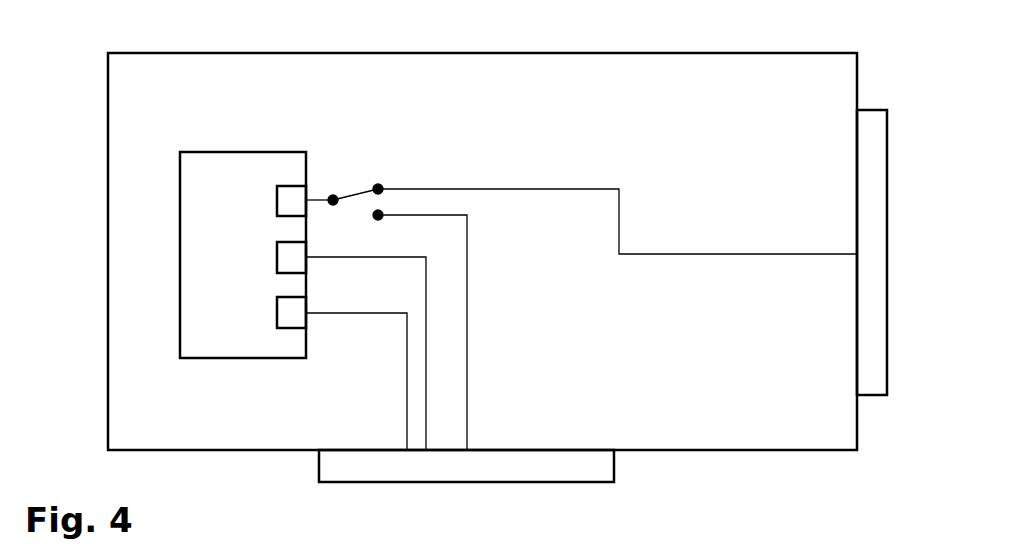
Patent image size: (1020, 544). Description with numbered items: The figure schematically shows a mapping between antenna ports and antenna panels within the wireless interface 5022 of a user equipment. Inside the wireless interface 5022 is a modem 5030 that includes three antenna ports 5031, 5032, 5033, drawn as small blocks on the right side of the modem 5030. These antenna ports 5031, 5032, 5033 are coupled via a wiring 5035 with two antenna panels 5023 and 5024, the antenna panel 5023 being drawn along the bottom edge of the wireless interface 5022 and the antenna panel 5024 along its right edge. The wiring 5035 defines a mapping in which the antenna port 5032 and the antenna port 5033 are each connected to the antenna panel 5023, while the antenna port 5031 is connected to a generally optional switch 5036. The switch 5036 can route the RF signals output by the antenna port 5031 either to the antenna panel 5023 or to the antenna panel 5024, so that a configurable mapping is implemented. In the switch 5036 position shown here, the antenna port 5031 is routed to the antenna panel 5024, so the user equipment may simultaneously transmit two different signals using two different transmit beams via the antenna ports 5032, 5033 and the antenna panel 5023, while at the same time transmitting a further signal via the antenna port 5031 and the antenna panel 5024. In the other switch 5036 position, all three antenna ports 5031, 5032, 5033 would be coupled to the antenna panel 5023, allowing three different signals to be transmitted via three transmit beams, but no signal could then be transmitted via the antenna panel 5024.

The wireless interface 5022 is at (186, 53).
The antenna panel 5023 is at (318, 477).
The antenna panel 5024 is at (910, 97).
The modem 5030 is at (208, 152).
The antenna port 5031 is at (277, 200).
The antenna port 5032 is at (277, 257).
The antenna port 5033 is at (277, 313).
The wiring 5035 is at (470, 163).
The switch 5036 is at (348, 190).